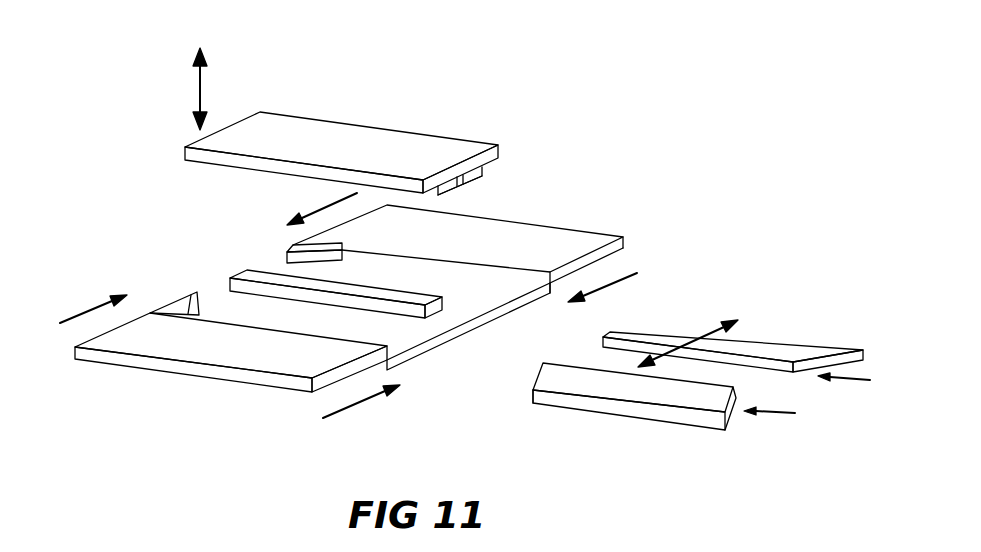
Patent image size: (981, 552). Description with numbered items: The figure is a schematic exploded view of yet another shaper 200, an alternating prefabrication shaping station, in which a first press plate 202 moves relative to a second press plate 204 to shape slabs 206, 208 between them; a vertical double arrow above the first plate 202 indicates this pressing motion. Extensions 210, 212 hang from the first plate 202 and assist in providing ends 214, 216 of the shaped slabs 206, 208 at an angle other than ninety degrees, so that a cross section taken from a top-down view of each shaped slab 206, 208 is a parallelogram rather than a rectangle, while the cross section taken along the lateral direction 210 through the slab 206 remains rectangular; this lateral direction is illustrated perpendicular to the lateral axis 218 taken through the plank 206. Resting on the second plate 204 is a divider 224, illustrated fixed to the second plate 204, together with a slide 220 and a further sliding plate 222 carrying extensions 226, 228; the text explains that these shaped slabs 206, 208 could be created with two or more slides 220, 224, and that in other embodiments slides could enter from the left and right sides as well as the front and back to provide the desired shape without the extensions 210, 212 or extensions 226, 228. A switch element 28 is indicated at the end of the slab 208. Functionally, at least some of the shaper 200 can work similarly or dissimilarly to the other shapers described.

The shaper 200 is at (614, 158).
The first press plate 202 is at (483, 148).
The second press plate 204 is at (420, 333).
The shaped slab 206 is at (788, 346).
The shaped slab 208 is at (677, 414).
The extension 210 is at (468, 176).
The extension 212 is at (466, 186).
The end 214 is at (866, 384).
The end 216 is at (793, 417).
The lateral axis 218 is at (696, 342).
The slide 220 is at (605, 236).
The slide plate 222 is at (205, 381).
The divider 224 is at (257, 277).
The extension 226 is at (312, 246).
The extension 228 is at (192, 303).
The switch 28 is at (560, 382).